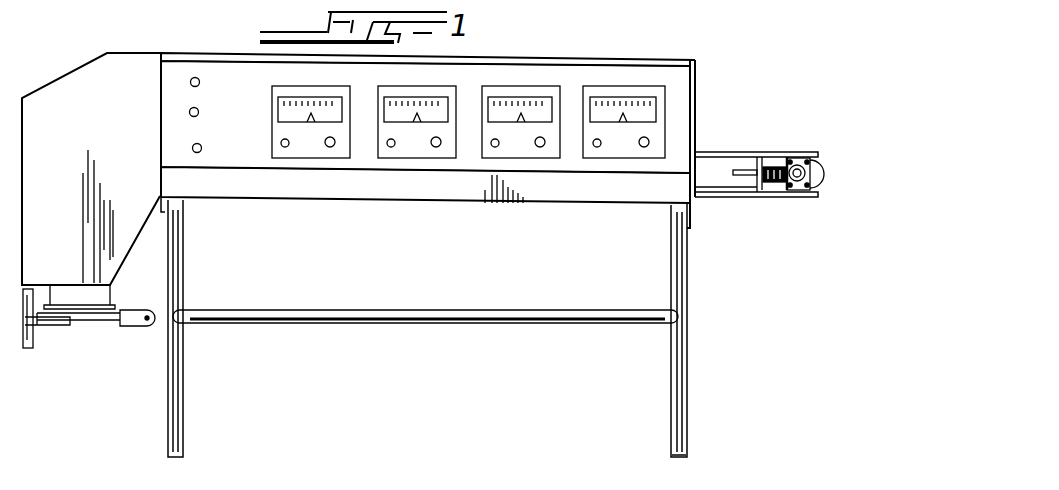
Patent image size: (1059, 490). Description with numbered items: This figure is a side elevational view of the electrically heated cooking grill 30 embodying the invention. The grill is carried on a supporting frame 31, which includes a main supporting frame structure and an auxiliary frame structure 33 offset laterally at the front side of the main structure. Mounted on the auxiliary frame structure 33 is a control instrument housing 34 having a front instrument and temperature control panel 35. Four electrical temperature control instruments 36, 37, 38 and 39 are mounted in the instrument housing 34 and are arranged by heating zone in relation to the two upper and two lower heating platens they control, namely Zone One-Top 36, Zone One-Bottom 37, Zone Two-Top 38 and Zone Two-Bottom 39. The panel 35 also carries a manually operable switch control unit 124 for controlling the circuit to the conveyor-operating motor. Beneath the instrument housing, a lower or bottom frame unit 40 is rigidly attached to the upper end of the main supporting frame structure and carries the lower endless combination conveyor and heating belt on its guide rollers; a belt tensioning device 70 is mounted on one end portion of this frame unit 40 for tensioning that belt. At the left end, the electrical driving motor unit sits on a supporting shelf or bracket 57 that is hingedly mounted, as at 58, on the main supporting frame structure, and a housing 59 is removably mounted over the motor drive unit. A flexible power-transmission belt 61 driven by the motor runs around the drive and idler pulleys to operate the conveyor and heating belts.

The electrically heated cooking grill 30 is at (570, 57).
The supporting frame 31 is at (684, 289).
The auxiliary frame structure 33 is at (686, 373).
The control instrument housing 34 is at (173, 72).
The front instrument and temperature control panel 35 is at (212, 163).
The temperature control instrument (Zone 1-Top) 36 is at (304, 148).
The temperature control instrument (Zone 1-Bottom) 37 is at (413, 150).
The temperature control instrument (Zone 2-Top) 38 is at (527, 150).
The temperature control instrument (Zone 2-Bottom) 39 is at (623, 150).
The lower or bottom frame unit 40 is at (777, 196).
The supporting shelf or bracket 57 is at (92, 318).
The hinge mounting 58 is at (147, 327).
The housing 59 is at (80, 83).
The flexible power-transmission belt 61 is at (28, 340).
The belt tensioning device 70 is at (731, 151).
The manually operable switch control unit 124 is at (182, 78).